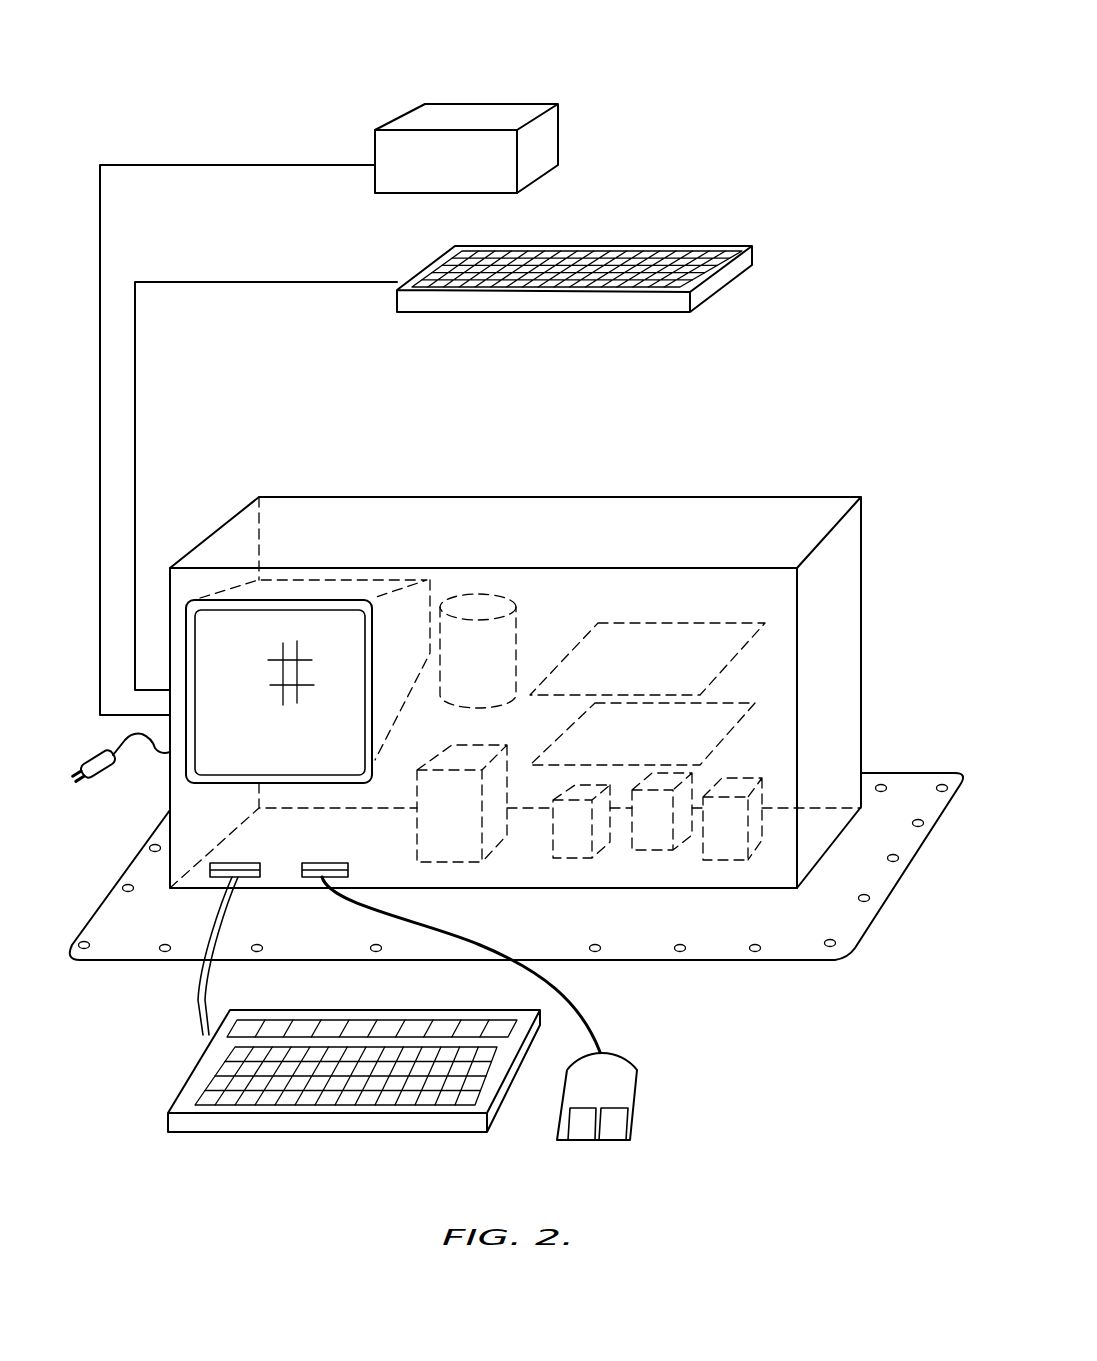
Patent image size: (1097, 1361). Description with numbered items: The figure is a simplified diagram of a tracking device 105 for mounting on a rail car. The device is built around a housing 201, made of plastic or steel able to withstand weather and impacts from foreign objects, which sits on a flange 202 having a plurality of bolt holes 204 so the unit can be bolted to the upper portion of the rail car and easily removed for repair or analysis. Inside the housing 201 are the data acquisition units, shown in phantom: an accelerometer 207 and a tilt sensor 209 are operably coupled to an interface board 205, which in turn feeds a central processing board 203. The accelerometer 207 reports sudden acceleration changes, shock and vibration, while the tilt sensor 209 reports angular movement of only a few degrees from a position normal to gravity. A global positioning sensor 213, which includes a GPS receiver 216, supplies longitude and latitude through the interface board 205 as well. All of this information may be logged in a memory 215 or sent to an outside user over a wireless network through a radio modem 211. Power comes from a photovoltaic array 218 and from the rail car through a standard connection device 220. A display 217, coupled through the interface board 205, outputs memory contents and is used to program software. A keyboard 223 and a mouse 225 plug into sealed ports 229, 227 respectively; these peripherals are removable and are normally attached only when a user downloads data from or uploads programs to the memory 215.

The tracking device 105 is at (832, 58).
The housing 201 is at (808, 513).
The flange 202 is at (898, 785).
The central processing board 203 is at (725, 660).
The bolt holes 204 is at (899, 860).
The interface board 205 is at (700, 737).
The accelerometer 207 is at (730, 840).
The tilt sensor 209 is at (658, 833).
The radio modem 211 is at (572, 843).
The global positioning sensor (GPS) 213 is at (468, 847).
The memory 215 is at (492, 603).
The GPS receiver 216 is at (540, 148).
The display 217 is at (375, 590).
The photovoltaic array 218 is at (730, 272).
The standard connection device 220 is at (115, 772).
The keyboard 223 is at (453, 1122).
The mouse 225 is at (625, 1088).
The port 227 is at (305, 878).
The port 229 is at (205, 878).